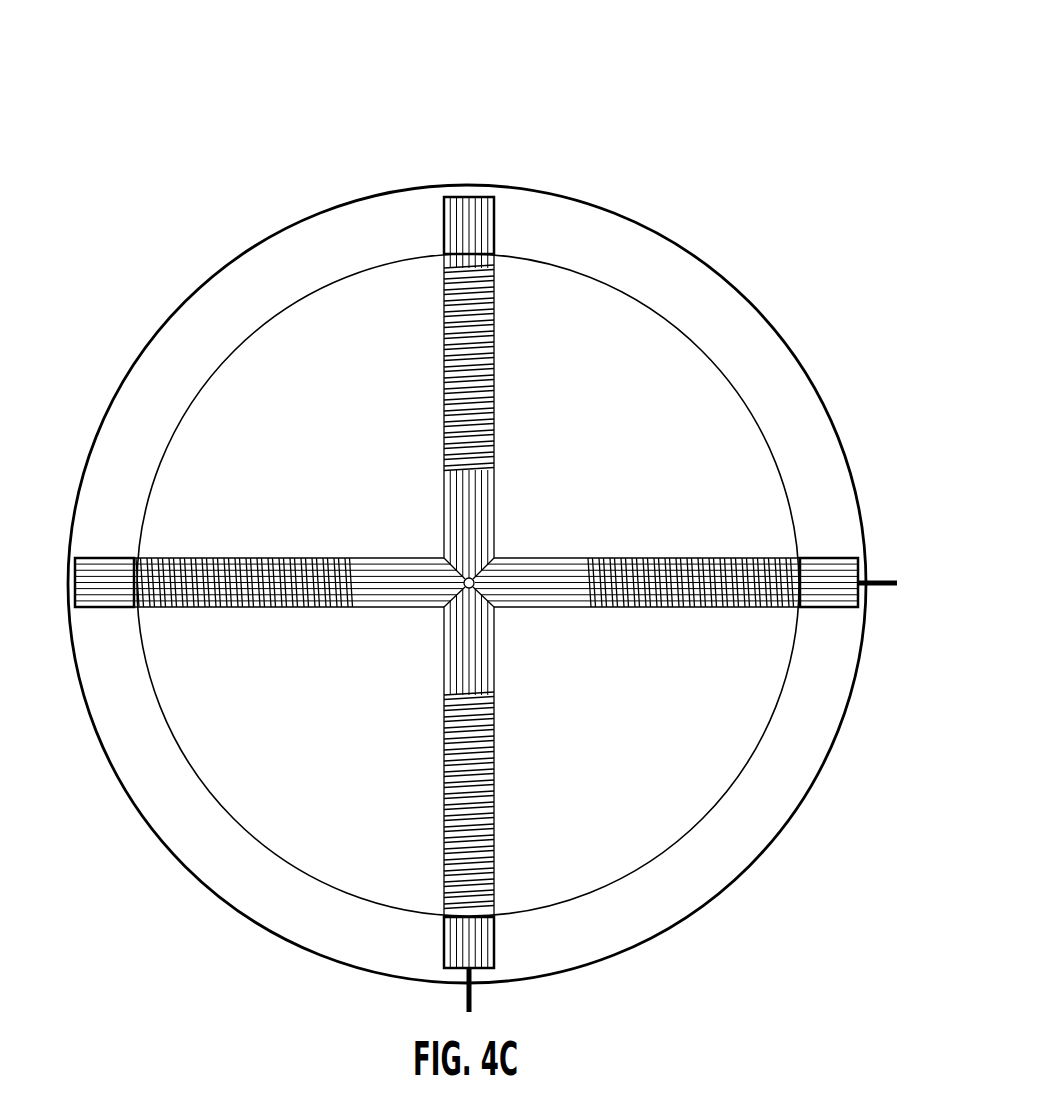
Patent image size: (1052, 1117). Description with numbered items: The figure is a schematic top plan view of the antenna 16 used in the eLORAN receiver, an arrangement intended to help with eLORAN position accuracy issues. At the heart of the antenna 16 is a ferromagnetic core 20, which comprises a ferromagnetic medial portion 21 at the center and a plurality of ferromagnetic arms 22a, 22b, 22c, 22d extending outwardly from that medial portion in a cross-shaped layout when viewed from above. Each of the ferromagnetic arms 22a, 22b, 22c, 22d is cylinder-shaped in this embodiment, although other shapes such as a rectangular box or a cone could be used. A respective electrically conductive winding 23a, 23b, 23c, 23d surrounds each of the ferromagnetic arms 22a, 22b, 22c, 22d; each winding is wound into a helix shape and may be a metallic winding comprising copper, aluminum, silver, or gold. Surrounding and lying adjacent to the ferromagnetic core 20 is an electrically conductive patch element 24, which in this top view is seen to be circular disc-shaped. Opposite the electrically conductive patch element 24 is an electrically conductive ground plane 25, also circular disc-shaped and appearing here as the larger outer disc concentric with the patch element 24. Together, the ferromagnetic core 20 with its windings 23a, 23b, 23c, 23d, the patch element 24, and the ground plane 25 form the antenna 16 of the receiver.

The antenna 16 is at (727, 96).
The ferromagnetic core 20 is at (588, 468).
The ferromagnetic medial portion 21 is at (532, 573).
The ferromagnetic arm 22a is at (485, 210).
The ferromagnetic arm 22b is at (841, 570).
The ferromagnetic arm 22c is at (494, 942).
The ferromagnetic arm 22d is at (108, 558).
The electrically conductive winding 23a is at (483, 270).
The electrically conductive winding 23b is at (760, 602).
The electrically conductive winding 23c is at (494, 827).
The electrically conductive winding 23d is at (188, 600).
The electrically conductive patch element 24 is at (642, 302).
The electrically conductive ground plane 25 is at (640, 230).